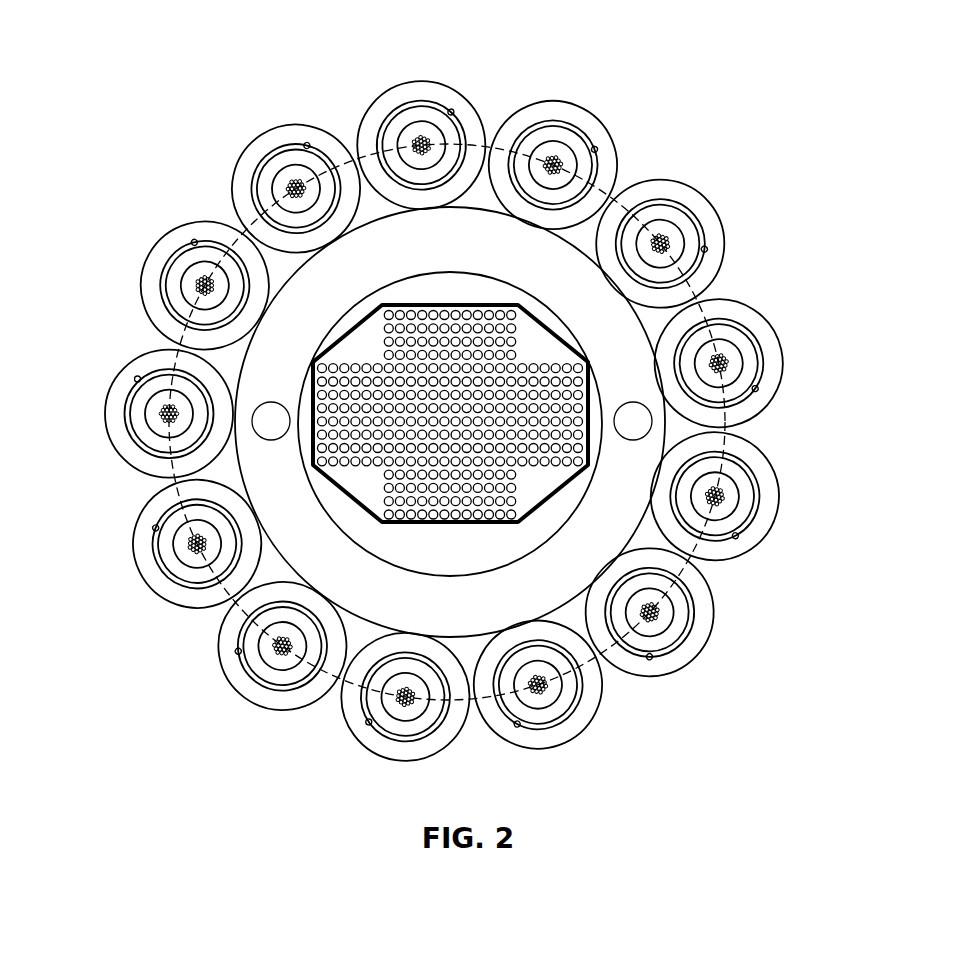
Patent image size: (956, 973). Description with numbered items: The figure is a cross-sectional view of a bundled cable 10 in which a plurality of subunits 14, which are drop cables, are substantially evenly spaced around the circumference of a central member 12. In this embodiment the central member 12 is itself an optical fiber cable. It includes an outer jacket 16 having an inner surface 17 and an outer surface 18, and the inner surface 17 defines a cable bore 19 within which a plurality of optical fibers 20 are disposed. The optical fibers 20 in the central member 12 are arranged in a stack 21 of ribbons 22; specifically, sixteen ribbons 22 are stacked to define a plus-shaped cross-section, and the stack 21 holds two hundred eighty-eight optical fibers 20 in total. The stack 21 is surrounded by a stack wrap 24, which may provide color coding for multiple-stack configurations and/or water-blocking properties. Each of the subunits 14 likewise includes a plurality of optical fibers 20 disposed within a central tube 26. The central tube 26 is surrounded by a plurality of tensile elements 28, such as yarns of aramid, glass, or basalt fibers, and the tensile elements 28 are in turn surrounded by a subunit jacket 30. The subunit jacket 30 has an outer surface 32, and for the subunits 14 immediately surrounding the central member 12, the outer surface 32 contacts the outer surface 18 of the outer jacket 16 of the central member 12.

The bundled cable 10 is at (167, 153).
The central member 12 is at (578, 248).
The subunits 14 is at (728, 235).
The outer jacket 16 is at (475, 223).
The inner surface 17 is at (343, 327).
The outer surface 18 is at (365, 617).
The cable bore 19 is at (537, 527).
The optical fibers 20 is at (148, 407).
The stack 21 is at (398, 308).
The ribbons 22 is at (520, 478).
The stack wrap 24 is at (350, 490).
The central tube 26 is at (150, 427).
The tensile elements 28 is at (135, 382).
The subunit jacket 30 is at (142, 462).
The outer surface 32 is at (145, 345).